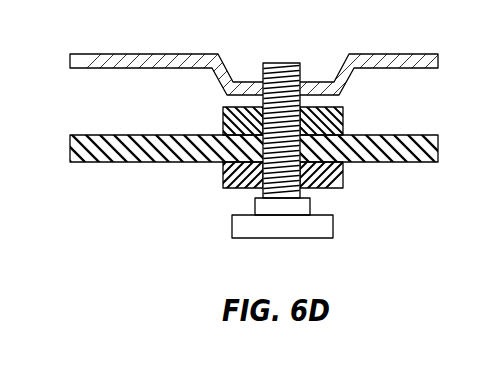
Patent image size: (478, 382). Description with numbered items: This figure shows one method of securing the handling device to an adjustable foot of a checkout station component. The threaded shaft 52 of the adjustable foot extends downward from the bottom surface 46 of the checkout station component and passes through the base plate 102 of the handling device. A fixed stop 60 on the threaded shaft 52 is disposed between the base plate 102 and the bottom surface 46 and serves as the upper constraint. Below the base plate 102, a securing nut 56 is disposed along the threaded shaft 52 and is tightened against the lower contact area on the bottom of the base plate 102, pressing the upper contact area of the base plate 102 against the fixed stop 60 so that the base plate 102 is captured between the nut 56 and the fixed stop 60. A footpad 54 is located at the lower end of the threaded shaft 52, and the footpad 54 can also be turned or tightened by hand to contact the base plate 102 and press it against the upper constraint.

The bottom surface 46 is at (398, 55).
The threaded shaft 52 is at (292, 72).
The footpad 54 is at (259, 226).
The securing nut 56 is at (338, 184).
The fixed stop 60 is at (344, 121).
The base plate 102 is at (400, 163).